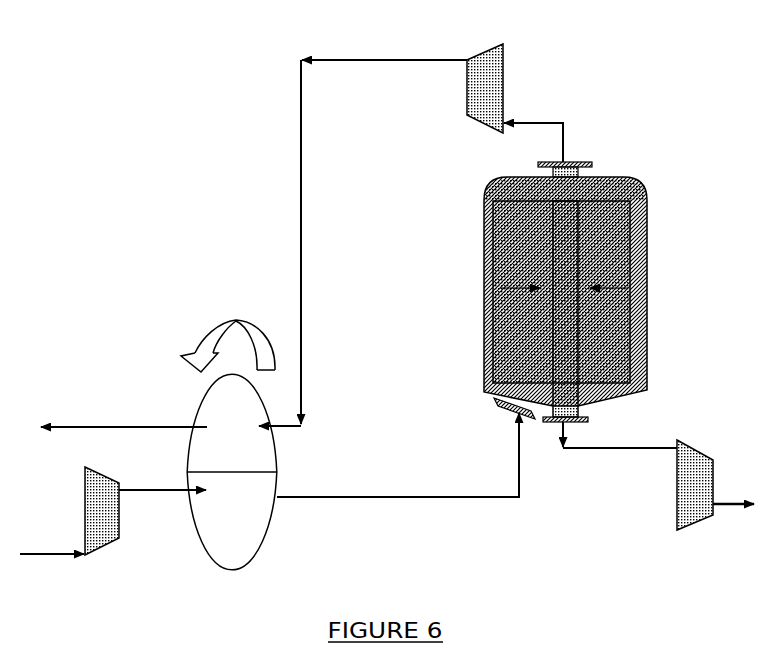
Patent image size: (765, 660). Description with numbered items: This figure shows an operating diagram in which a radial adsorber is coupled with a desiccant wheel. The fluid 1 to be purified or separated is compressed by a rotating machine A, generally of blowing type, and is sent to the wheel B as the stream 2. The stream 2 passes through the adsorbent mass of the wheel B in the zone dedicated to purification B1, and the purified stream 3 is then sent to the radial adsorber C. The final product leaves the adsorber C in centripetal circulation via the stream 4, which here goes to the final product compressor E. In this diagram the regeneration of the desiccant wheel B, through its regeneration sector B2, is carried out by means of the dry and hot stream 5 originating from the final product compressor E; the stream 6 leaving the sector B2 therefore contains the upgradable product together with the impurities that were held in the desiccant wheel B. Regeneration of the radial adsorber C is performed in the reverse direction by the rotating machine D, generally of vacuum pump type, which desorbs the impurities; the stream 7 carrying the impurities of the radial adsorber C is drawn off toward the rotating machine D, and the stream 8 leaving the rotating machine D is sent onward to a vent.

The fluid to be purified 1 is at (52, 546).
The stream 2 is at (162, 477).
The purified stream 3 is at (398, 455).
The stream 4 is at (548, 142).
The stream 5 is at (363, 234).
The stream 6 is at (124, 418).
The stream 7 is at (620, 446).
The product stream 8 is at (733, 495).
The rotating machine A is at (102, 511).
The wheel B is at (229, 460).
The zone dedicated to purification B1 is at (232, 521).
The regeneration sector B2 is at (232, 423).
The radial adsorber C is at (565, 296).
The rotating machine D is at (695, 485).
The final product compressor E is at (485, 88).